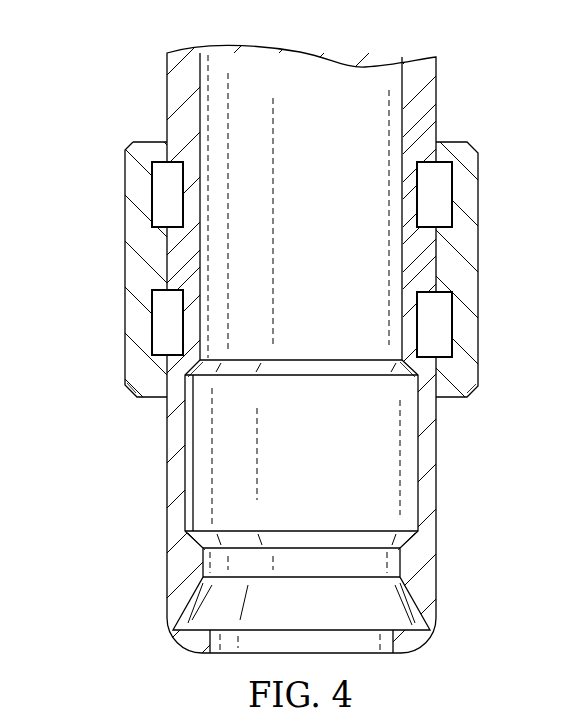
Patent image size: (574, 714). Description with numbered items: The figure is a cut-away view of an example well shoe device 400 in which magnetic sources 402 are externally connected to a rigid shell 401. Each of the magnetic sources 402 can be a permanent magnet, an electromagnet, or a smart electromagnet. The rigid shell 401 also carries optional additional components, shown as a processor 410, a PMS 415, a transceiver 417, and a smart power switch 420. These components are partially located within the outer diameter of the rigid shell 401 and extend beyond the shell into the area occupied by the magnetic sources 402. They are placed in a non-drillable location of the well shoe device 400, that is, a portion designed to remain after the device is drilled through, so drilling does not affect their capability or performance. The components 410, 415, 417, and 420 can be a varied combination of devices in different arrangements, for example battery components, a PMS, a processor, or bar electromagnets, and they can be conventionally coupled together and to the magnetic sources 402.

The well shoe device 400 is at (287, 357).
The rigid shell 401 is at (165, 93).
The magnetic source 402 is at (123, 262).
The processor 410 is at (440, 180).
The PMS 415 is at (440, 320).
The transceiver 417 is at (163, 196).
The smart power switch 420 is at (162, 335).